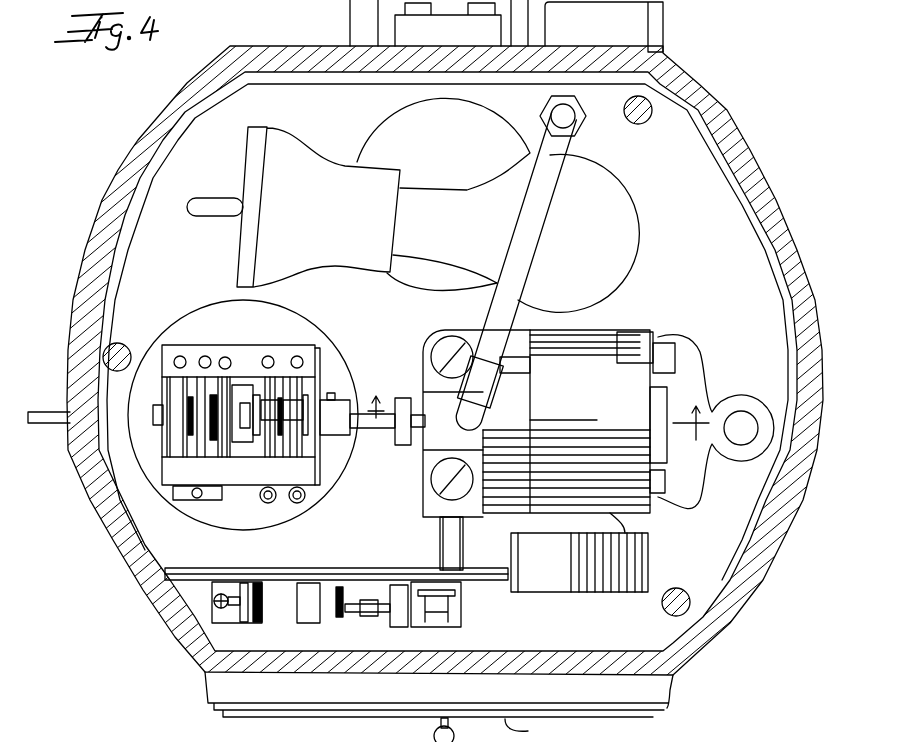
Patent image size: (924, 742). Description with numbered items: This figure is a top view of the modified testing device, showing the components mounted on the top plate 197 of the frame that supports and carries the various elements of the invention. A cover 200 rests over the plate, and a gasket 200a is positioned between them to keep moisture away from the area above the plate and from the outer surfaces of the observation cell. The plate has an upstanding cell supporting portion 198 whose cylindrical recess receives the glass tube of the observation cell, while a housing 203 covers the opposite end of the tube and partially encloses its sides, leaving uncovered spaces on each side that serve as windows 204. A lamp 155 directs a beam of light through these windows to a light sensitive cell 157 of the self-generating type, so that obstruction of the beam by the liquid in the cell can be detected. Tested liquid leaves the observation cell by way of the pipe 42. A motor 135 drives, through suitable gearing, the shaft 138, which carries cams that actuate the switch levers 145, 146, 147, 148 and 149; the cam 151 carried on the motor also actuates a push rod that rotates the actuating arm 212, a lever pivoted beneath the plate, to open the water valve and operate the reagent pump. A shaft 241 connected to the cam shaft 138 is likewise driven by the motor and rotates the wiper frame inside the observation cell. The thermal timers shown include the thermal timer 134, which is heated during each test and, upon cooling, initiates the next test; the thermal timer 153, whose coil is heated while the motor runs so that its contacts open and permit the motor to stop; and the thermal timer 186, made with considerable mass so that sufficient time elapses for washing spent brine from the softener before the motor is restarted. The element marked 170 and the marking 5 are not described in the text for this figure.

The cover 200 is at (702, 97).
The gasket 200a is at (722, 133).
The top plate 197 is at (447, 361).
The pipe 42 is at (592, 149).
The lamp 155 is at (498, 205).
The cell supporting portion 198 is at (688, 357).
The housing 203 is at (579, 421).
The windows 204 is at (628, 523).
The shaft 138 is at (338, 410).
The shaft 241 is at (368, 425).
The cam 151 is at (237, 407).
The switch lever 146 is at (270, 387).
The switch lever 149 is at (180, 392).
The switch lever 148 is at (200, 443).
The switch lever 147 is at (220, 448).
The switch lever 145 is at (298, 443).
The motor 135 is at (183, 503).
The thermal timer 134 is at (230, 617).
The thermal timer 186 is at (341, 612).
The thermal timer 153 is at (440, 625).
The light sensitive cell 157 is at (579, 562).
The knob 170 is at (530, 733).
The actuating arm 212 is at (40, 406).
The section line 5- 5 is at (538, 416).